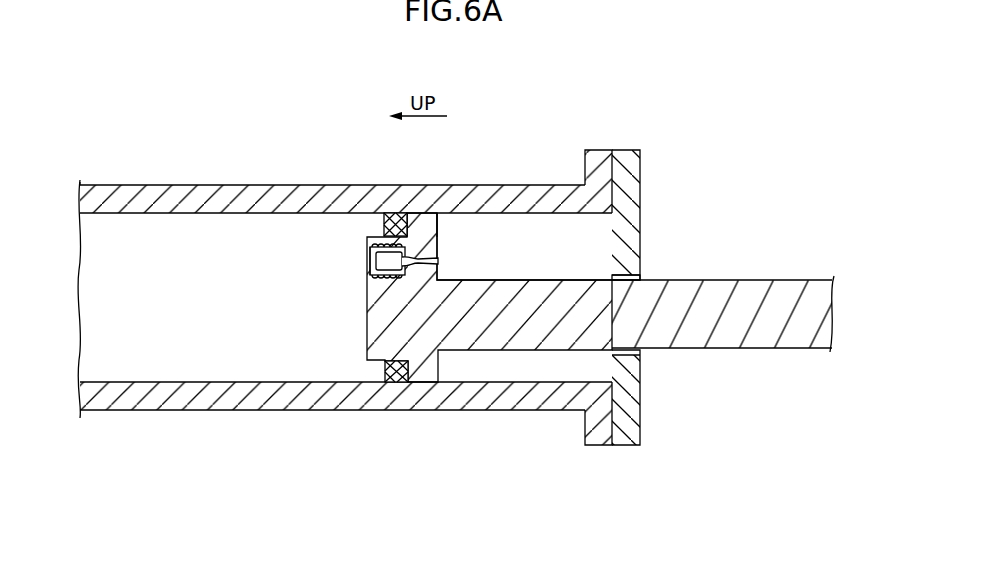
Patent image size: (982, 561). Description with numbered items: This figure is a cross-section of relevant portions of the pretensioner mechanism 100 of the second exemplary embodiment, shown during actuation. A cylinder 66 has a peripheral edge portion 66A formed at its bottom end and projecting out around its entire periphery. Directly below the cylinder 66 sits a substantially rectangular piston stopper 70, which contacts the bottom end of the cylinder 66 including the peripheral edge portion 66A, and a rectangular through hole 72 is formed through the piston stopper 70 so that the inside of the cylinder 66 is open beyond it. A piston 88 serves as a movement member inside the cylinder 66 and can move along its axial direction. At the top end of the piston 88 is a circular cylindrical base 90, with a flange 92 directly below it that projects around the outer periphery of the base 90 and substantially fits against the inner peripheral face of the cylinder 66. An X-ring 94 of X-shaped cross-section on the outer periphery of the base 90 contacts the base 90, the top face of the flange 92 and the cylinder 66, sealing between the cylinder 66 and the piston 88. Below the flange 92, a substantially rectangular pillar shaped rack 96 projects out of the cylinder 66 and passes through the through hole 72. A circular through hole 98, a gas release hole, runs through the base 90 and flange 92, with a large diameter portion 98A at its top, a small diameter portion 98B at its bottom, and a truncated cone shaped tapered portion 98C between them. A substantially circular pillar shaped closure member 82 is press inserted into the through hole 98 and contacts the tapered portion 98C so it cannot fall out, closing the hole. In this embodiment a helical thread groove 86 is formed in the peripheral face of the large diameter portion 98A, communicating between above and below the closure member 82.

The pretensioner mechanism 100 is at (232, 128).
The cylinder 66 is at (290, 185).
The peripheral edge portion 66A is at (592, 150).
The piston stopper 70 is at (622, 150).
The through hole 72 is at (613, 280).
The closure member 82 is at (372, 260).
The thread groove 86 is at (373, 266).
The piston 88 is at (736, 276).
The base 90 is at (367, 321).
The flange 92 is at (400, 228).
The X-ring 94 is at (388, 372).
The rack 96 is at (794, 280).
The through hole 98 is at (439, 252).
The large diameter portion 98A is at (370, 252).
The small diameter portion 98B is at (440, 261).
The tapered portion 98C is at (420, 240).